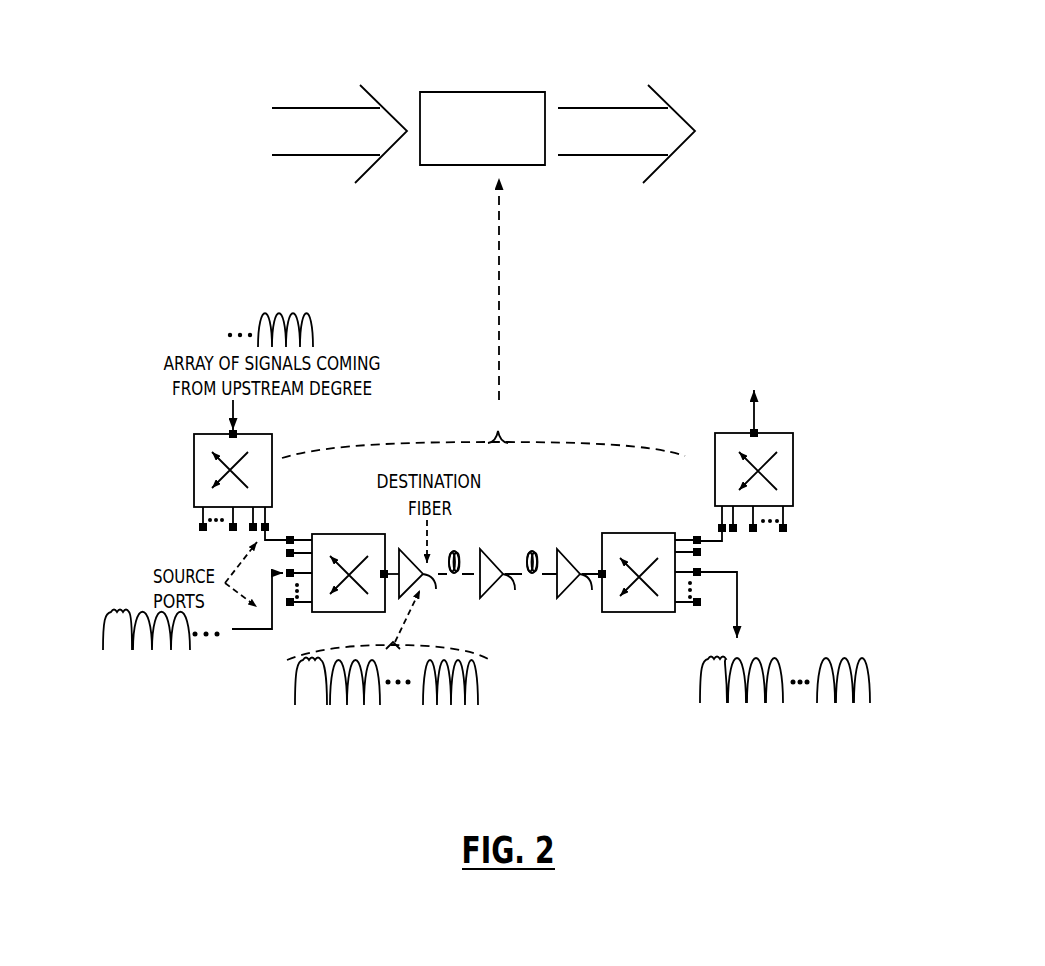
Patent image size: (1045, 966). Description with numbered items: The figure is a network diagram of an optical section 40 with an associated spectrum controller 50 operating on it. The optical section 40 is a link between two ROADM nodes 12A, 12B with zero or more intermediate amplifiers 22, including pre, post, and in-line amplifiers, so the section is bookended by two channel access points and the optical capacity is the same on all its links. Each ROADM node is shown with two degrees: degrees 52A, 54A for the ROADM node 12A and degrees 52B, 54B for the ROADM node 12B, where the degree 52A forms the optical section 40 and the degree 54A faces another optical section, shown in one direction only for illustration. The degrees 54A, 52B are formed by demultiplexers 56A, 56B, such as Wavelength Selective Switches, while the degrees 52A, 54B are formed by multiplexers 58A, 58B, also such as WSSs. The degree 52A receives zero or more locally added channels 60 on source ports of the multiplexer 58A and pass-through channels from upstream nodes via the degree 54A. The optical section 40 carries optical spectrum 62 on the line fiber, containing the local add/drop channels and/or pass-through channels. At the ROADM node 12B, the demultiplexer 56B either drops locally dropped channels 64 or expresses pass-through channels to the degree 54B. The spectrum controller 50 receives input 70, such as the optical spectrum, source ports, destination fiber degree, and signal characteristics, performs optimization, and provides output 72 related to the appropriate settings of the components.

The ROADM node 12A is at (206, 465).
The ROADM node 12B is at (783, 483).
The intermediate amplifier 22 is at (487, 553).
The optical section 40 is at (577, 387).
The spectrum controller 50 is at (515, 92).
The degree 52A is at (303, 525).
The degree 52B is at (687, 528).
The degree 54A is at (190, 517).
The degree 54B is at (800, 517).
The demultiplexer 56A is at (273, 447).
The demultiplexer 56B is at (638, 614).
The multiplexer 58A is at (312, 613).
The multiplexer 58B is at (794, 443).
The locally added channels 60 is at (143, 602).
The optical spectrum 62 is at (497, 688).
The locally dropped channels 64 is at (796, 648).
The input 70 is at (313, 87).
The output 72 is at (598, 88).